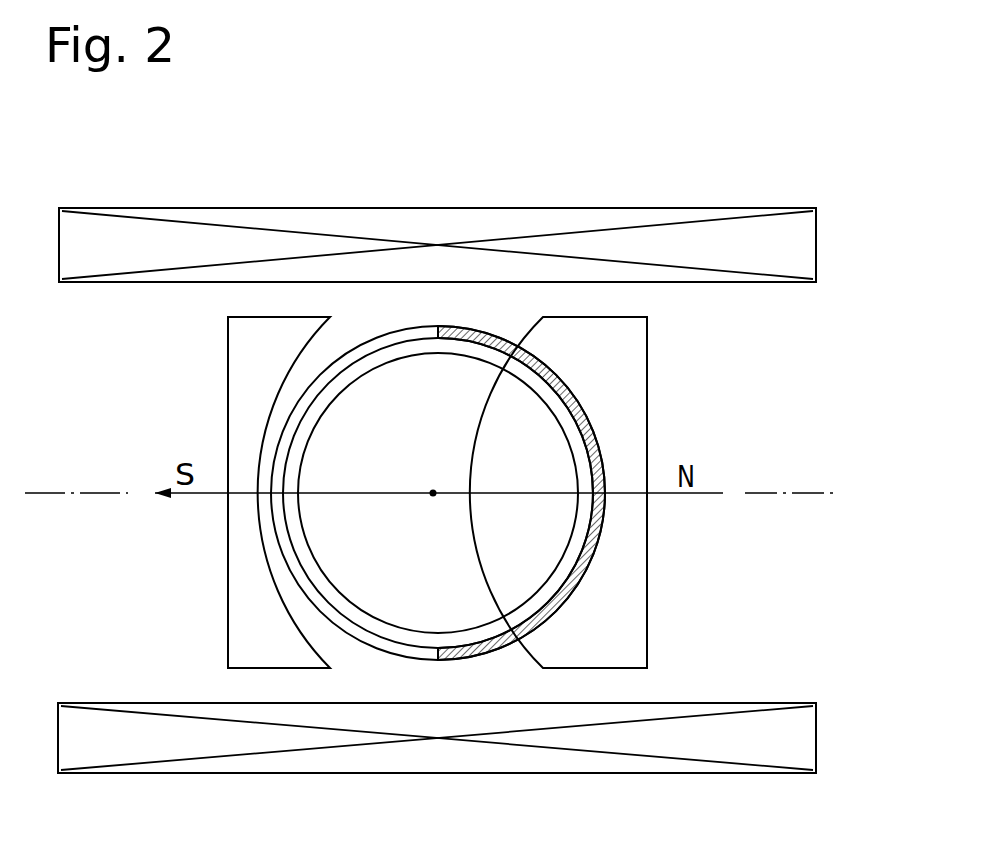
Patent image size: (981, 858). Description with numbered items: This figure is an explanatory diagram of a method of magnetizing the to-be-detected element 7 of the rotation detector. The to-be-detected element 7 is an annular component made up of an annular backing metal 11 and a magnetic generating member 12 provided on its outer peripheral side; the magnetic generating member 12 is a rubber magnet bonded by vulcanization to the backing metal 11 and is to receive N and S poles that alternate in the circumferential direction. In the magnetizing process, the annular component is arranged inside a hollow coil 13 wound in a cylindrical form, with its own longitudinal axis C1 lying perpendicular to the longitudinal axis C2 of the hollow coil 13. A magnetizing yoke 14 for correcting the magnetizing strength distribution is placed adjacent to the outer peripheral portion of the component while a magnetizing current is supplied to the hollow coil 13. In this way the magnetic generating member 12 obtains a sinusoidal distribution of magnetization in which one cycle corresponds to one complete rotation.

The to-be-detected element 7 is at (438, 359).
The backing metal 11 is at (422, 348).
The magnetic generating member 12 is at (487, 333).
The hollow coil 13 is at (805, 242).
The magnetizing yoke 14 is at (240, 352).
The longitudinal axis of the to-be-detected element C1 is at (435, 497).
The longitudinal axis of the hollow coil C2 is at (758, 493).